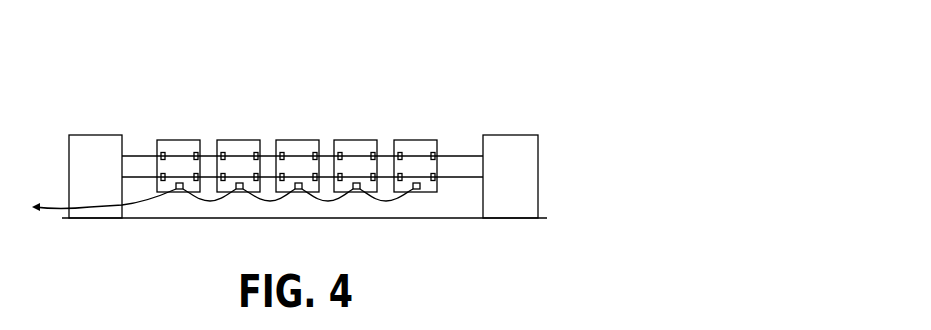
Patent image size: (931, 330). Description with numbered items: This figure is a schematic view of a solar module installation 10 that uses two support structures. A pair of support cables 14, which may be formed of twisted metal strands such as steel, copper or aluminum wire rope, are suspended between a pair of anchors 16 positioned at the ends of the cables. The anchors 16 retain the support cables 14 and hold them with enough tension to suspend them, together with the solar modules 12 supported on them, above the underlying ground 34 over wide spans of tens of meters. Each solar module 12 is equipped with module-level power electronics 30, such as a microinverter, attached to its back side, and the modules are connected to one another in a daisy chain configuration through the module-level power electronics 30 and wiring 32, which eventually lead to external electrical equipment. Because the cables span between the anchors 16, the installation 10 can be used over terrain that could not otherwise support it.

The solar module installation 10 is at (542, 55).
The solar module 12 is at (229, 140).
The support cables 14 is at (467, 176).
The anchors 16 is at (69, 150).
The module-level power electronics 30 is at (174, 199).
The wiring 32 is at (208, 208).
The ground 34 is at (460, 218).